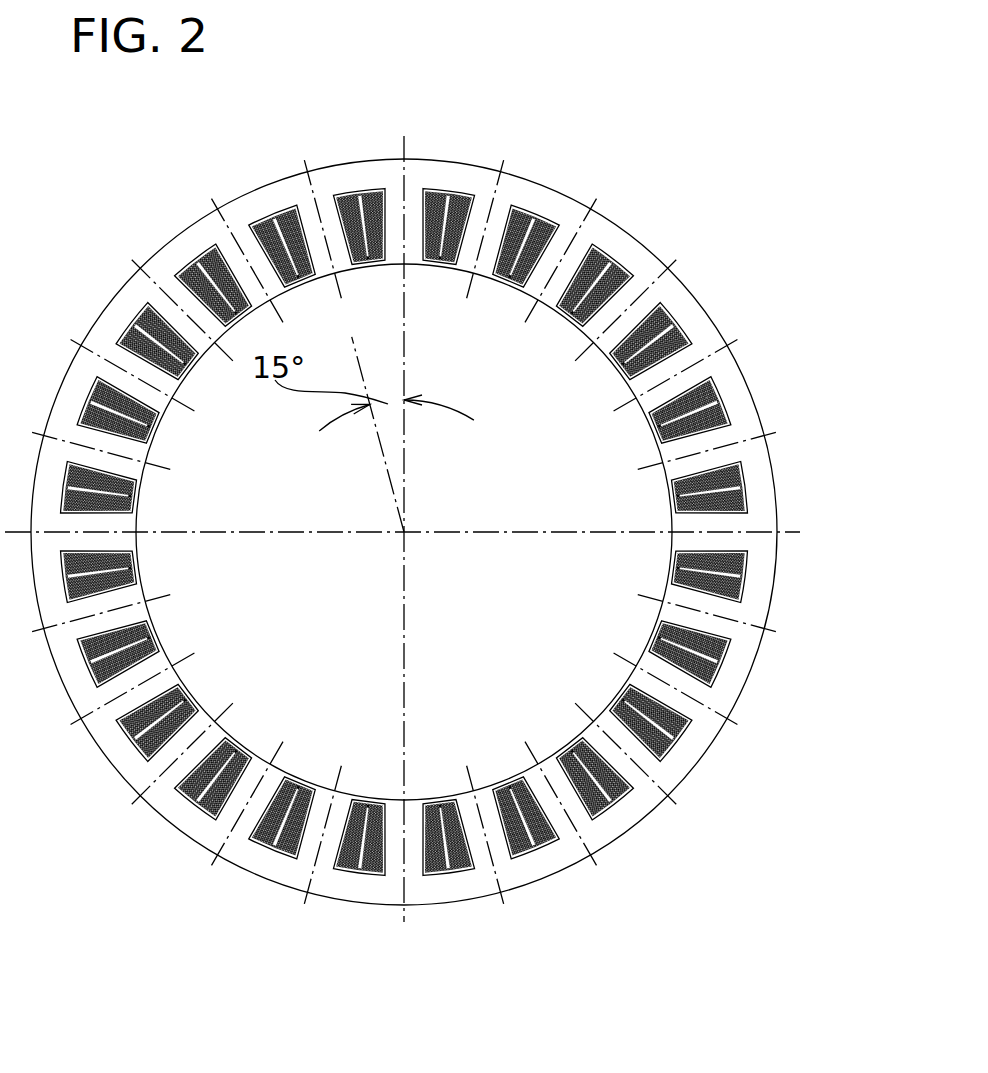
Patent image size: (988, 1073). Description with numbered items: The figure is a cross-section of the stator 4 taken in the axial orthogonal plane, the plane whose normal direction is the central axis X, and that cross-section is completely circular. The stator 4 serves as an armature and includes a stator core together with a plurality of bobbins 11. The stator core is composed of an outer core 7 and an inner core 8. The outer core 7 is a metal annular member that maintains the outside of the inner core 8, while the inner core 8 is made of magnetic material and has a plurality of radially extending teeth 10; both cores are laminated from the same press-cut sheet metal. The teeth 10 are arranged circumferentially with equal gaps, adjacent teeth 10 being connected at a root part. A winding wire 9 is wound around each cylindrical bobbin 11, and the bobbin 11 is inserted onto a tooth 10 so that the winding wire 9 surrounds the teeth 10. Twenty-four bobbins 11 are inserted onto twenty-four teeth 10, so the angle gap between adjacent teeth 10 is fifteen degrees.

The stator 4 is at (605, 122).
The outer core 7 is at (620, 242).
The inner core 8 is at (605, 347).
The winding wire 9 is at (423, 233).
The teeth 10 is at (395, 200).
The bobbin 11 is at (446, 187).
The central axis X is at (405, 530).